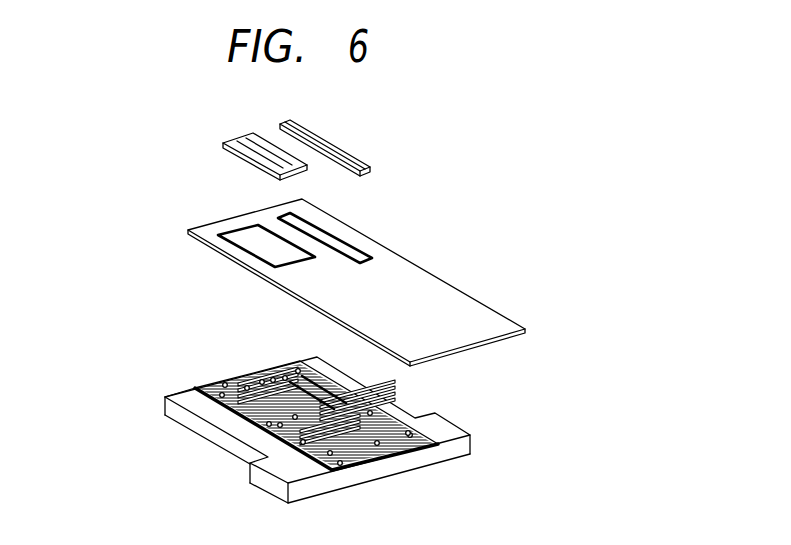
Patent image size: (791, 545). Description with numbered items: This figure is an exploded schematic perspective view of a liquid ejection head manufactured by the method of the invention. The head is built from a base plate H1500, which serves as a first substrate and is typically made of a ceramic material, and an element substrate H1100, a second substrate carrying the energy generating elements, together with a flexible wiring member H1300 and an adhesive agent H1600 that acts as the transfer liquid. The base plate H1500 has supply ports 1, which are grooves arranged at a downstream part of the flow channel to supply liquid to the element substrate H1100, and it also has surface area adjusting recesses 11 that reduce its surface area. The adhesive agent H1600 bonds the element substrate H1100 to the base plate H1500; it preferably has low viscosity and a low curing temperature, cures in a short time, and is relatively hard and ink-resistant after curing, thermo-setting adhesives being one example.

The element substrate H1100 is at (336, 147).
The flexible wiring member H1300 is at (422, 281).
The base plate H1500 is at (447, 430).
The adhesive agent H1600 is at (212, 388).
The supply ports 1 is at (310, 368).
The surface area adjusting recesses 11 is at (205, 397).